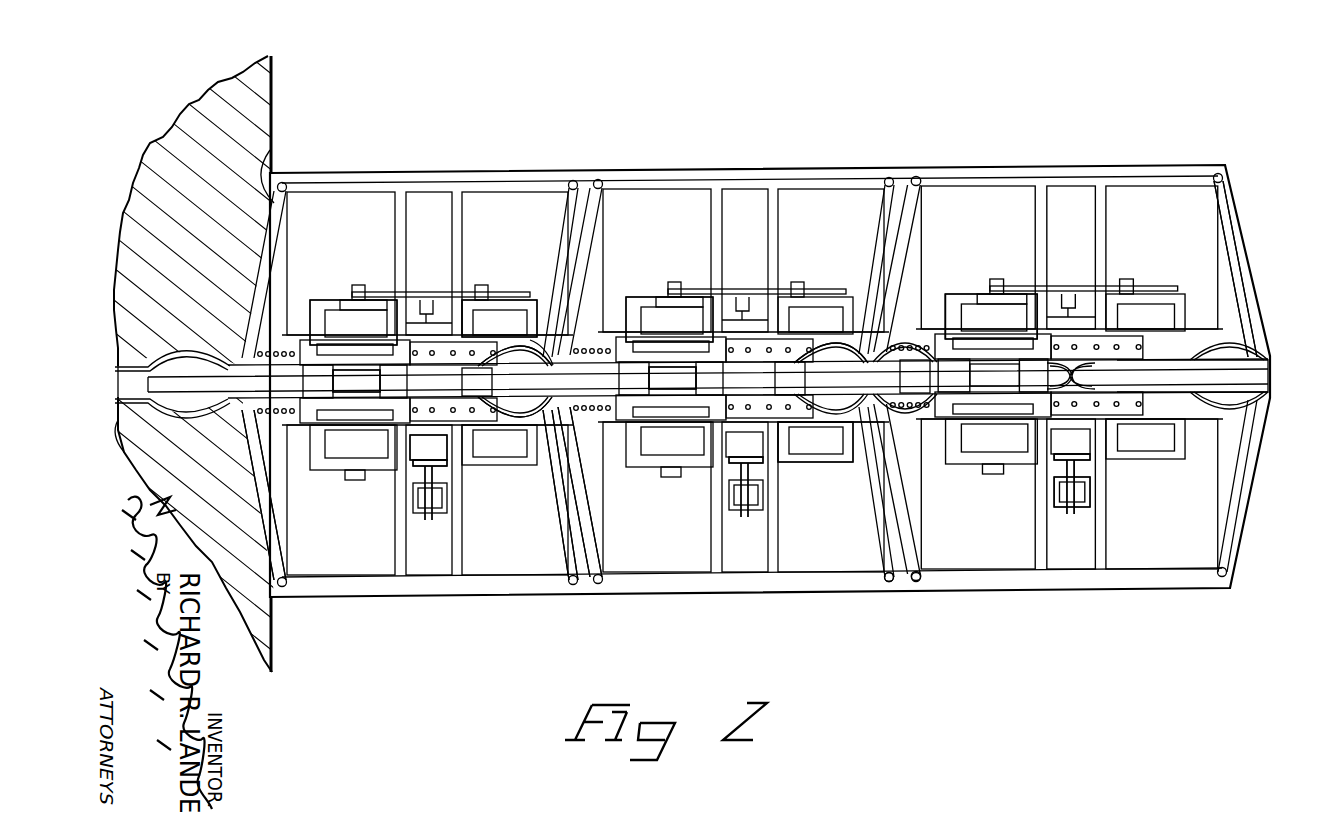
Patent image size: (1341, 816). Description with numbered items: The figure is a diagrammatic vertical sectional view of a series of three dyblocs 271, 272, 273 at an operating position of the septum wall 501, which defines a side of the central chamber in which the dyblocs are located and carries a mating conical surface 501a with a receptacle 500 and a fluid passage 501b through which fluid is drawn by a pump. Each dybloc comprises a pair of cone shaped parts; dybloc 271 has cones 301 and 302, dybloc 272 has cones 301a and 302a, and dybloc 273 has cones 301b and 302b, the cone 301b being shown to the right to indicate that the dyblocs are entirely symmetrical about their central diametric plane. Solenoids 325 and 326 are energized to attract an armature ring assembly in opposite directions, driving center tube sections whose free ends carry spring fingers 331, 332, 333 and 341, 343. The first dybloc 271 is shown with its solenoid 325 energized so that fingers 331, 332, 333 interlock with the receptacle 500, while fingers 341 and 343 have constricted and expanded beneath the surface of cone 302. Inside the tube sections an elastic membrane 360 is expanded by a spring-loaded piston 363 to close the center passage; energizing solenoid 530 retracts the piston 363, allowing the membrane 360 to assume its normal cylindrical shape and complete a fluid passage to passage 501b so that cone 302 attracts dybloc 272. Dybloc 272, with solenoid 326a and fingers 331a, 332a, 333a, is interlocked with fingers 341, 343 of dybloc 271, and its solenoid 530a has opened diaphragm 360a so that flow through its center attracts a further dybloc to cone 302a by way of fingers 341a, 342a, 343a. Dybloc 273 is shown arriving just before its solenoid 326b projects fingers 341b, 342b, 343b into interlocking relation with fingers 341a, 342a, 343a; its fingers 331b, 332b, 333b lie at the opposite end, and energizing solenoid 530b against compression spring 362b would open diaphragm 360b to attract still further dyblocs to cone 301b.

The dybloc 271 is at (418, 170).
The dybloc 272 is at (712, 166).
The dybloc 273 is at (1032, 163).
The cone shaped part 301 is at (262, 497).
The cone 301a is at (588, 553).
The cone 301b is at (1235, 220).
The cone shaped part 302 is at (565, 523).
The cone 302a is at (892, 568).
The cone 302b is at (915, 573).
The solenoid 325 is at (337, 318).
The solenoid 326 is at (482, 320).
The solenoid 326a is at (800, 443).
The solenoid 326b is at (970, 313).
The spring finger 331 is at (166, 402).
The spring finger 331a is at (487, 423).
The spring finger 331b is at (1248, 400).
The spring finger 332 is at (150, 384).
The spring finger 332a is at (470, 392).
The spring finger 332b is at (1262, 384).
The spring finger 333 is at (182, 355).
The spring finger 333a is at (479, 366).
The spring finger 333b is at (1247, 348).
The spring finger 341 is at (543, 488).
The spring finger 341a is at (860, 443).
The spring finger 341b is at (920, 410).
The spring finger 342a is at (800, 385).
The spring finger 342b is at (928, 378).
The spring finger 343 is at (517, 350).
The spring finger 343a is at (820, 347).
The spring finger 343b is at (920, 345).
The elastic membrane 360 is at (340, 370).
The diaphragm 360a is at (655, 395).
The diaphragm 360b is at (1082, 385).
The compression spring 362b is at (1075, 463).
The piston 363 is at (445, 463).
The receptacle 500 is at (163, 353).
The septum wall 501 is at (268, 100).
The mating conical surface 501a is at (273, 155).
The fluid passage 501b is at (118, 408).
The solenoid 530 is at (422, 510).
The solenoid 530a is at (737, 503).
The solenoid 530b is at (1065, 500).